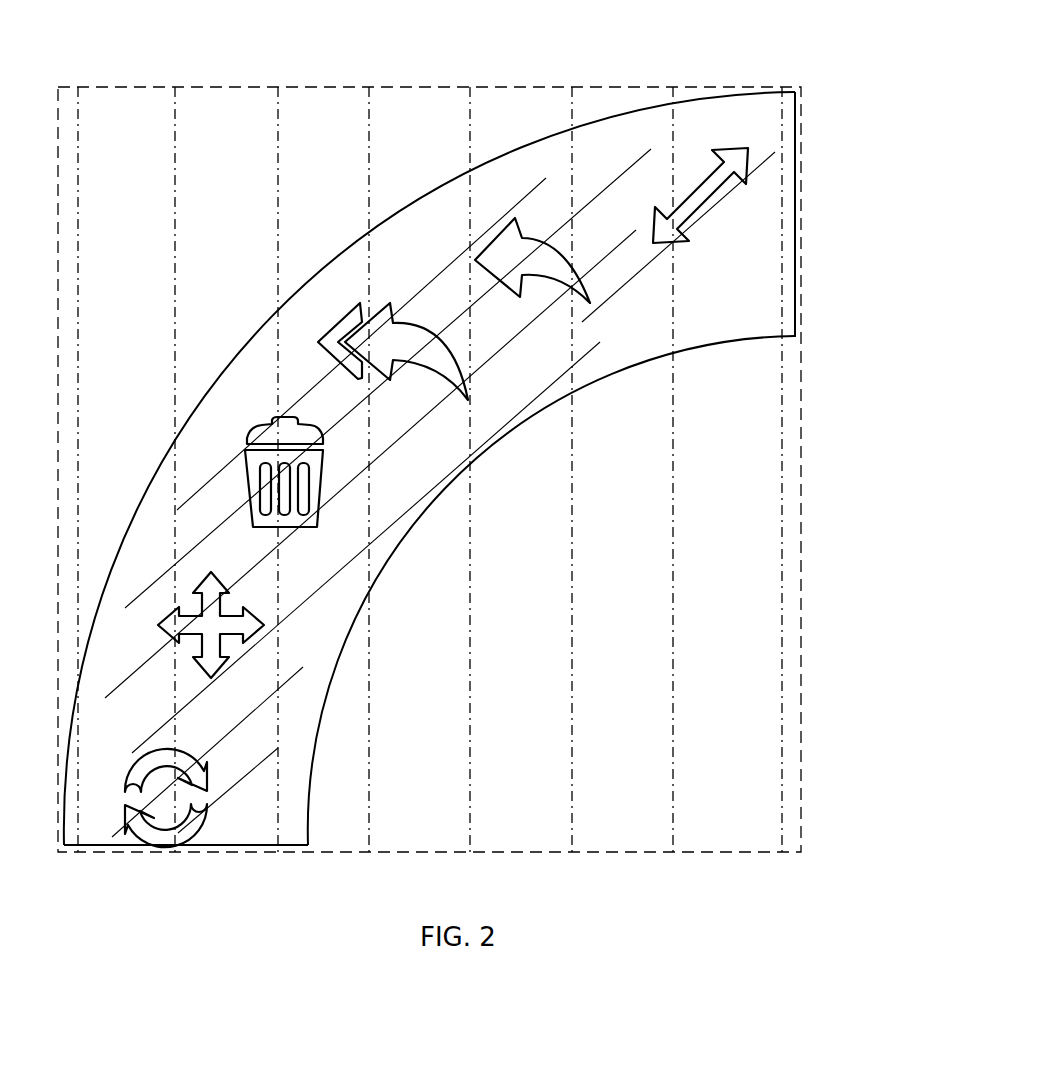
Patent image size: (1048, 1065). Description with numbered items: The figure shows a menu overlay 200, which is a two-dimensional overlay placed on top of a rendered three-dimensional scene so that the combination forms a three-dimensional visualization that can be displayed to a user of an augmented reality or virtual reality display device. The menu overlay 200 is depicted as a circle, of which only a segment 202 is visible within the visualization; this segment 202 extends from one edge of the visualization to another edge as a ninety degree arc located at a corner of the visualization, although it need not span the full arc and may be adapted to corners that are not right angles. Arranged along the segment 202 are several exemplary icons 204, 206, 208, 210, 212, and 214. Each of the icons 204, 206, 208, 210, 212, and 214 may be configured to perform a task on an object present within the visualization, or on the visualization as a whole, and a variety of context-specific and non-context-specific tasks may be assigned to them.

The menu overlay 200 is at (1016, 53).
The segment 202 is at (279, 310).
The icon 204 is at (142, 796).
The icon 206 is at (189, 625).
The icon 208 is at (253, 472).
The icon 210 is at (393, 335).
The icon 212 is at (522, 243).
The icon 214 is at (700, 180).